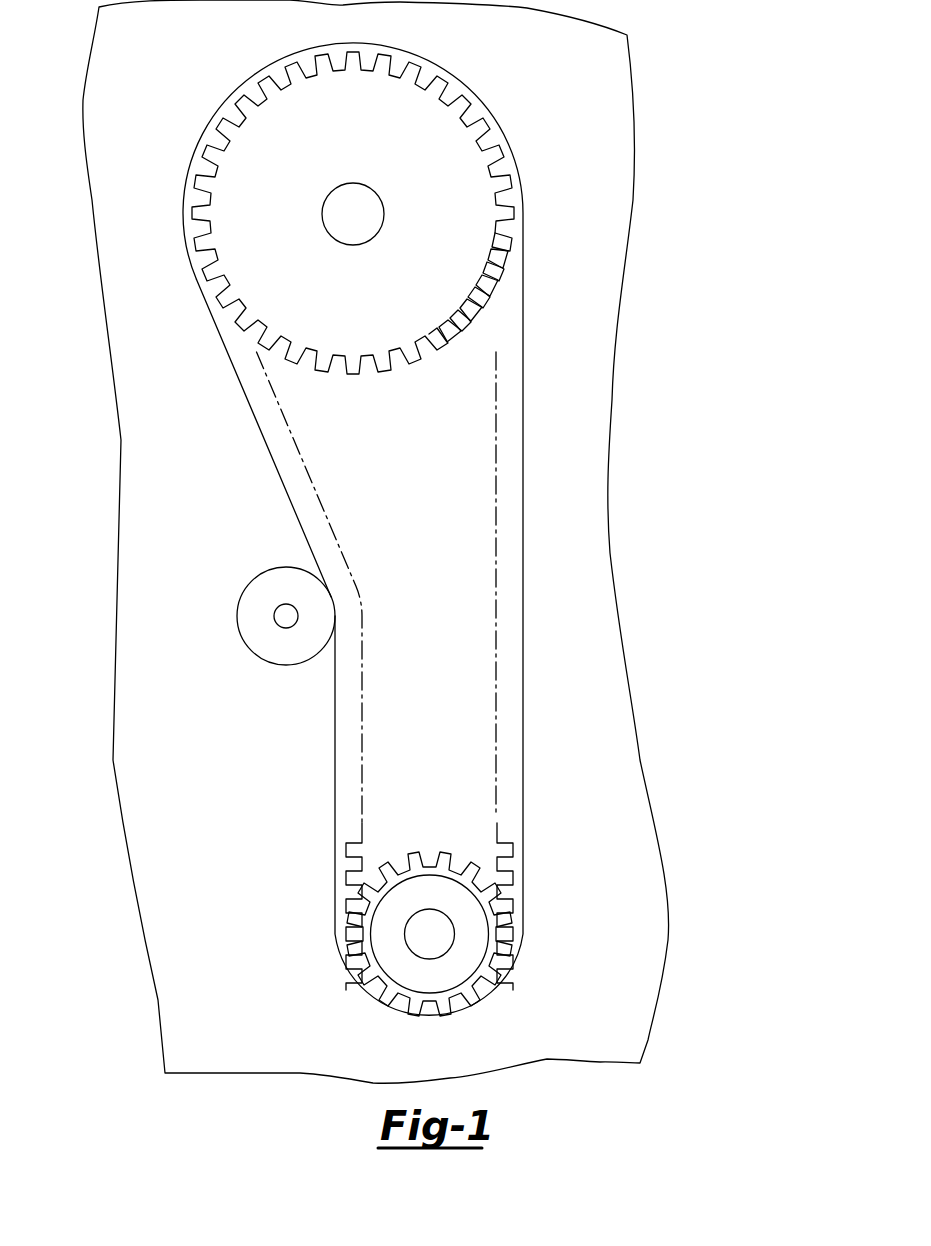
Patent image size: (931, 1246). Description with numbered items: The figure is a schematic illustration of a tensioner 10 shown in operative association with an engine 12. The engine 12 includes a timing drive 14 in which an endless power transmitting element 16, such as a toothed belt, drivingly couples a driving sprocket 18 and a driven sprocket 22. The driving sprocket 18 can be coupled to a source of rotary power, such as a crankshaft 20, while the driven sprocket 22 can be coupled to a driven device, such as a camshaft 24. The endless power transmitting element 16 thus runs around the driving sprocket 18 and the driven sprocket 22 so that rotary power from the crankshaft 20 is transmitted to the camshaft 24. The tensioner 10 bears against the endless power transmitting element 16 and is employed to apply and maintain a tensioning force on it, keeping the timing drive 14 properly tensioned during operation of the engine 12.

The tensioner 10 is at (262, 660).
The engine 12 is at (118, 510).
The timing drive 14 is at (516, 988).
The endless power transmitting element 16 is at (506, 783).
The driving sprocket 18 is at (397, 968).
The crankshaft 20 is at (437, 937).
The driven sprocket 22 is at (448, 167).
The camshaft 24 is at (365, 230).